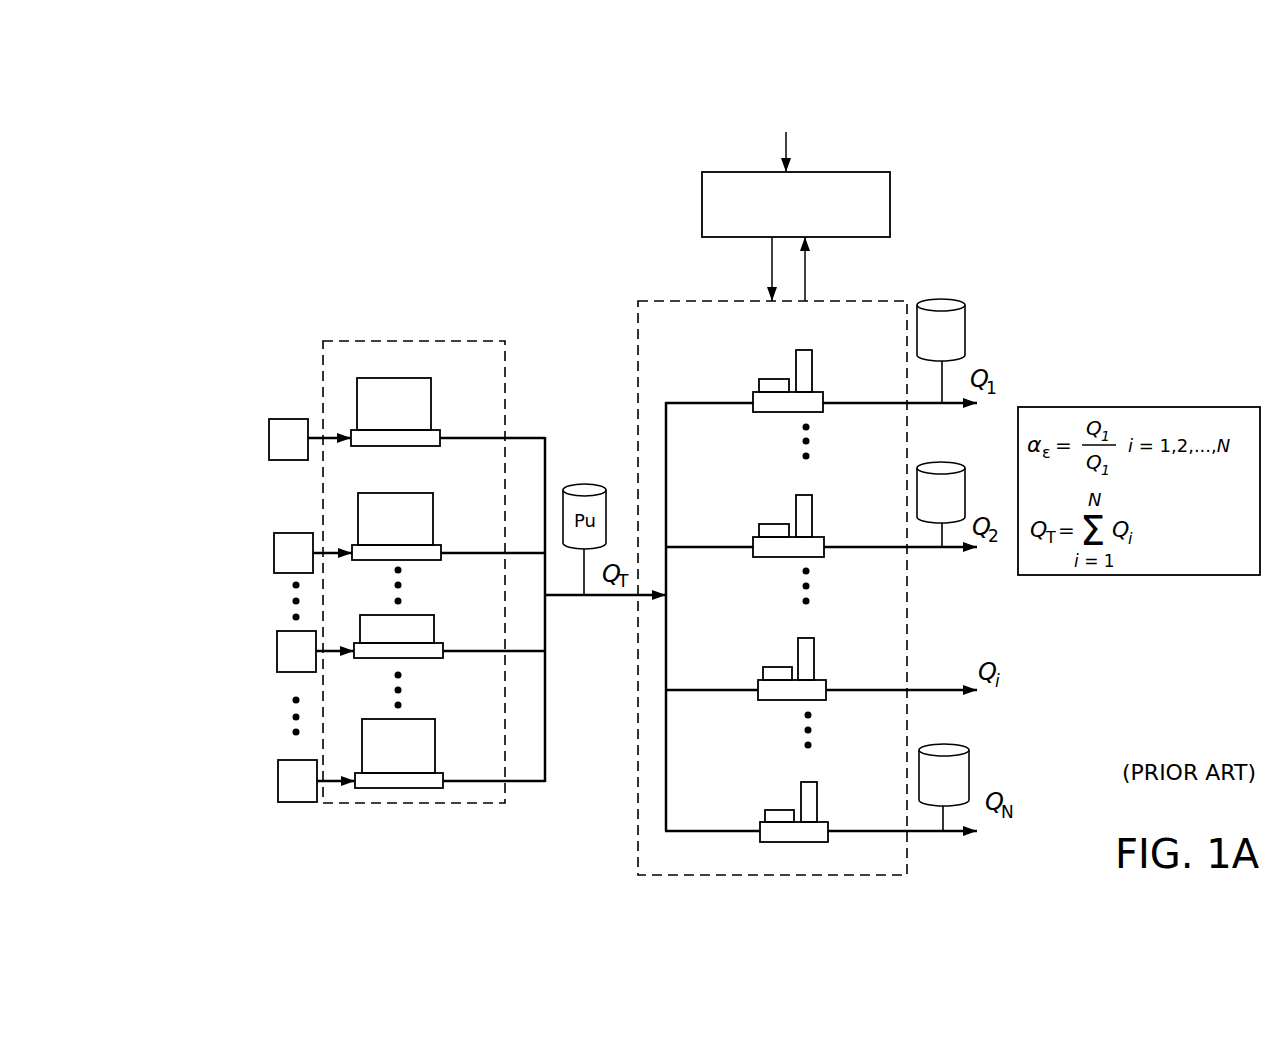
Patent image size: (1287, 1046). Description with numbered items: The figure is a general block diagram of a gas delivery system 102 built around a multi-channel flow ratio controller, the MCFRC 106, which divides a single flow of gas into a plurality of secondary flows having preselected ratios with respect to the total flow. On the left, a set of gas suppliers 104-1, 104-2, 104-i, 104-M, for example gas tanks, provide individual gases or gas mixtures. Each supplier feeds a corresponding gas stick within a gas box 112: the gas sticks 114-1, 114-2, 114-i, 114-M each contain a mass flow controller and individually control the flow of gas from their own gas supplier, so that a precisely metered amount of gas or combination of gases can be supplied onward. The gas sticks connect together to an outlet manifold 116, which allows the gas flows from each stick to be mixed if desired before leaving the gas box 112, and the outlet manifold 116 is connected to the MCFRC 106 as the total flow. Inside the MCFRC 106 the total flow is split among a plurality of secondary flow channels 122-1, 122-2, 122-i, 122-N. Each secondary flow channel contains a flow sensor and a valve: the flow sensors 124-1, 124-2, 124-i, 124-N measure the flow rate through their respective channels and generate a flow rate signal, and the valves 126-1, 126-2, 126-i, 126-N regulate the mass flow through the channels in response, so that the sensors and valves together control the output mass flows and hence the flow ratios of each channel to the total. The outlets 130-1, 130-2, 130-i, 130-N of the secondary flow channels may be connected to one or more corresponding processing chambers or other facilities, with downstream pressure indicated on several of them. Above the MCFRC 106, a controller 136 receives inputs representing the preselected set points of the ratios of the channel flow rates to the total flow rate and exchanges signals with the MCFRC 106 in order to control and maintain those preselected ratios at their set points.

The gas delivery system 102 is at (627, 862).
The gas supplier 104-1 is at (270, 443).
The gas supplier 104-2 is at (275, 553).
The gas supplier 104-i is at (278, 651).
The gas supplier 104-M is at (279, 780).
The MCFRC 106 is at (636, 788).
The gas box 112 is at (418, 341).
The gas stick 114-1 is at (414, 378).
The gas stick 114-2 is at (415, 493).
The gas stick 114-i is at (418, 615).
The gas stick 114-M is at (419, 719).
The outlet manifold 116 is at (546, 457).
The secondary flow channel 122-1 is at (703, 404).
The secondary flow channel 122-2 is at (703, 548).
The secondary flow channel 122-i is at (708, 691).
The secondary flow channel 122-N is at (708, 832).
The flow sensor 124-1 is at (758, 385).
The flow sensor 124-2 is at (758, 530).
The flow sensor 124-i is at (762, 673).
The flow sensor 124-N is at (764, 815).
The valve 126-1 is at (812, 369).
The valve 126-2 is at (812, 513).
The valve 126-i is at (814, 656).
The valve 126-N is at (817, 798).
The outlet 130-1 is at (912, 405).
The outlet 130-2 is at (912, 549).
The outlet 130-i is at (915, 692).
The outlet 130-N is at (915, 833).
The controller 136 is at (890, 208).